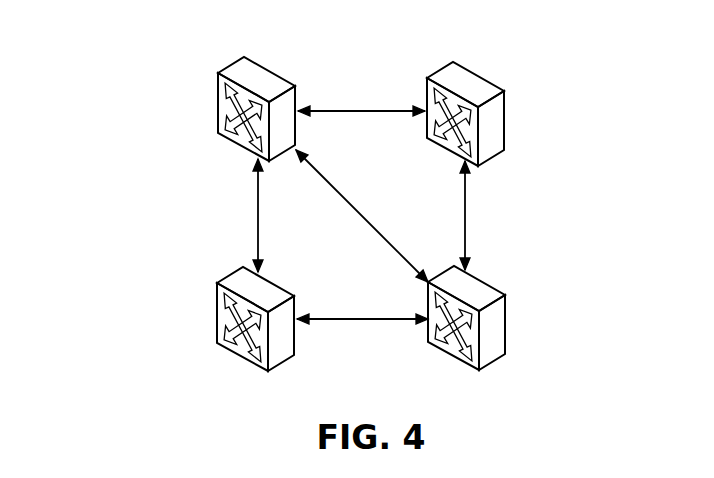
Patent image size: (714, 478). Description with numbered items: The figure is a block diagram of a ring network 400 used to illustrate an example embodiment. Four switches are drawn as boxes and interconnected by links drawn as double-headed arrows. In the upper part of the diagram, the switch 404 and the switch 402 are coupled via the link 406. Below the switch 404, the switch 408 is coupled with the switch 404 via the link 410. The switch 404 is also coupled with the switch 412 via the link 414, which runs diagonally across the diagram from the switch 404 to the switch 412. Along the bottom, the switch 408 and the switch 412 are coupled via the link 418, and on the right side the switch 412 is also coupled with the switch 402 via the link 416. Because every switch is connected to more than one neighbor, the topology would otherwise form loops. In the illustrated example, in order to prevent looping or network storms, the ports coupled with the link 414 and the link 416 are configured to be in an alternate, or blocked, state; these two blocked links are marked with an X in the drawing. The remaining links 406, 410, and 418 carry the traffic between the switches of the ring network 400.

The ring network 400 is at (126, 210).
The switch 402 is at (505, 120).
The switch 404 is at (218, 100).
The link 406 is at (360, 110).
The switch 408 is at (217, 312).
The link 410 is at (258, 215).
The switch 412 is at (507, 330).
The link 414 is at (375, 218).
The link 416 is at (478, 220).
The link 418 is at (343, 322).